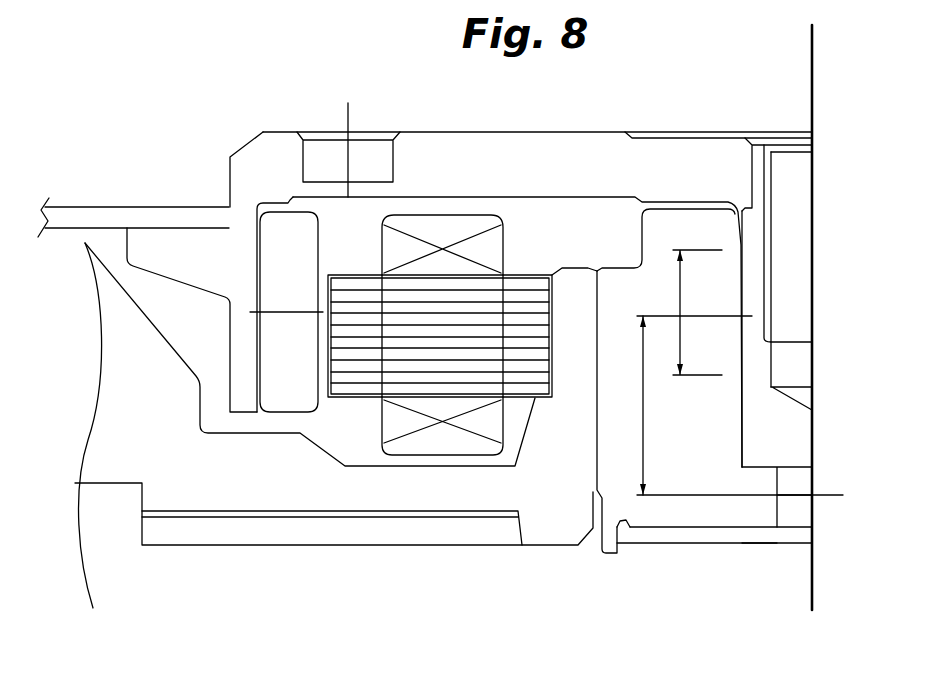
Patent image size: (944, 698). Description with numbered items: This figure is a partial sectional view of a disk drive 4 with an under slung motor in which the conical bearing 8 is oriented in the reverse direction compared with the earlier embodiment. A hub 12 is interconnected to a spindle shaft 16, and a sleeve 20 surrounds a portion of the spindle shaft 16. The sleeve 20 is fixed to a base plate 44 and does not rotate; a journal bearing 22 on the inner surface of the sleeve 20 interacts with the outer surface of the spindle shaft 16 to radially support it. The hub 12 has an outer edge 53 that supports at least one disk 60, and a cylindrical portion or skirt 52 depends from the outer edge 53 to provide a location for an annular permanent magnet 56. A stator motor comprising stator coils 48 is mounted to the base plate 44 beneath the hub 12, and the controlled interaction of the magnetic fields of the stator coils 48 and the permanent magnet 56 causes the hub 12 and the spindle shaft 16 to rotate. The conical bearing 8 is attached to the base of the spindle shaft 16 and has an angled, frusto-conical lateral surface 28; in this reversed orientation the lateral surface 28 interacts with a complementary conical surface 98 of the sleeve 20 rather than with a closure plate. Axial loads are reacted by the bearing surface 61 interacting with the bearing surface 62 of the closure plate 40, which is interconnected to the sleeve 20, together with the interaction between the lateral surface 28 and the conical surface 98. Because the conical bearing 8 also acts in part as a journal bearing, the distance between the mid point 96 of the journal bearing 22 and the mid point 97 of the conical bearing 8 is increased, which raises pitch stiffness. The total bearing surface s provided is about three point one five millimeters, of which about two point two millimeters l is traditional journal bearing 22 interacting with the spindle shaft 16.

The electromagnetic actuator 4 is at (180, 137).
The conical bearing 8 is at (768, 503).
The hub 12 is at (452, 157).
The spindle shaft 16 is at (783, 415).
The sleeve 20 is at (643, 441).
The journal bearing 22 is at (745, 280).
The lateral bearing surface 28 is at (747, 520).
The closure plate 40 is at (800, 533).
The base plate 44 is at (450, 490).
The stator coils 48 is at (352, 372).
The cylindrical portion 52 is at (238, 357).
The outer edge 53 is at (229, 178).
The annular permanent magnet 56 is at (278, 388).
The disk 60 is at (152, 217).
The bearing surface 61 is at (738, 496).
The bearing surface of closure plate 62 is at (758, 505).
The mid point of the journal bearing 96 is at (743, 317).
The mid point of the conical bearing 97 is at (722, 523).
The conical surface of the sleeve 98 is at (737, 497).
The journal bearing length l is at (690, 312).
The bearing surface length s is at (635, 405).